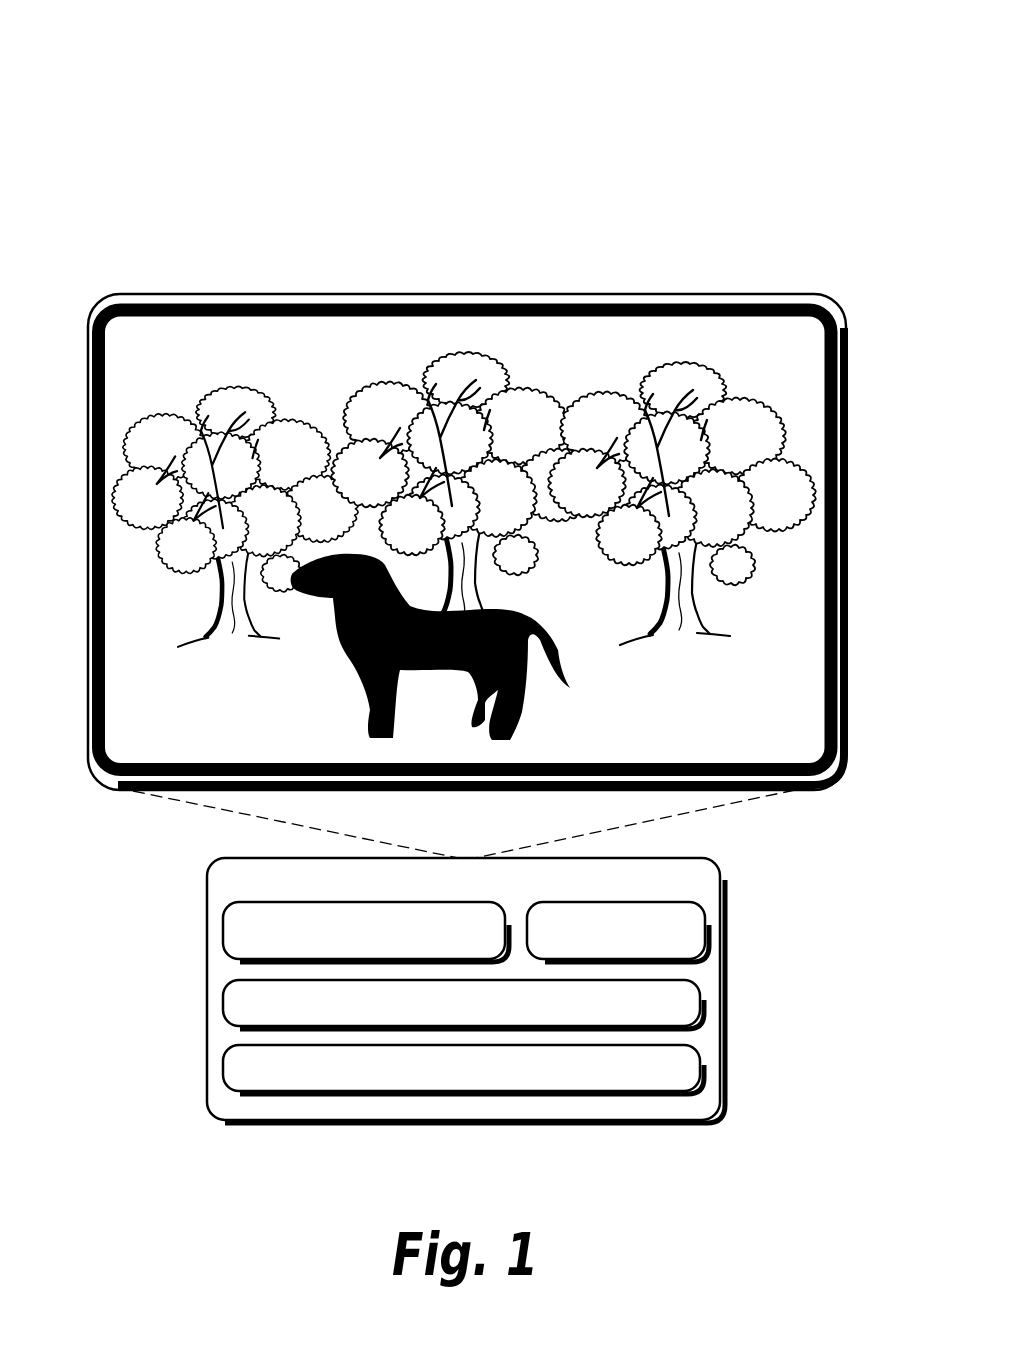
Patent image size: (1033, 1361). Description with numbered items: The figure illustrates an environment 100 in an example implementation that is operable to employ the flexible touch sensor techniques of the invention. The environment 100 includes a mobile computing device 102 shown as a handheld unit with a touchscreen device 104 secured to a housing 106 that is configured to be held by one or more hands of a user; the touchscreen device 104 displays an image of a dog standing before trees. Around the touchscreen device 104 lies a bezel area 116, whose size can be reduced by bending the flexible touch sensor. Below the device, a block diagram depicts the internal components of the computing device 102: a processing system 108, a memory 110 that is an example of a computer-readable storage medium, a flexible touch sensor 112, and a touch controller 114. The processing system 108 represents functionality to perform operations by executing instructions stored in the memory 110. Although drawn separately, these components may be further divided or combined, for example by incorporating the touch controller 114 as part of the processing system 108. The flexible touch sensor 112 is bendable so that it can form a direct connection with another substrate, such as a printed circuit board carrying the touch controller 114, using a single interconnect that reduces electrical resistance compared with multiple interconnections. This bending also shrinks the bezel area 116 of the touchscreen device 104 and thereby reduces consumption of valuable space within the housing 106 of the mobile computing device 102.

The environment 100 is at (180, 82).
The mobile computing device 102 is at (619, 894).
The touchscreen device 104 is at (180, 357).
The housing 106 is at (463, 292).
The processing system 108 is at (485, 944).
The memory 110 is at (679, 944).
The flexible touch sensor 112 is at (602, 1014).
The touch controller 114 is at (572, 1079).
The bezel area 116 is at (677, 304).